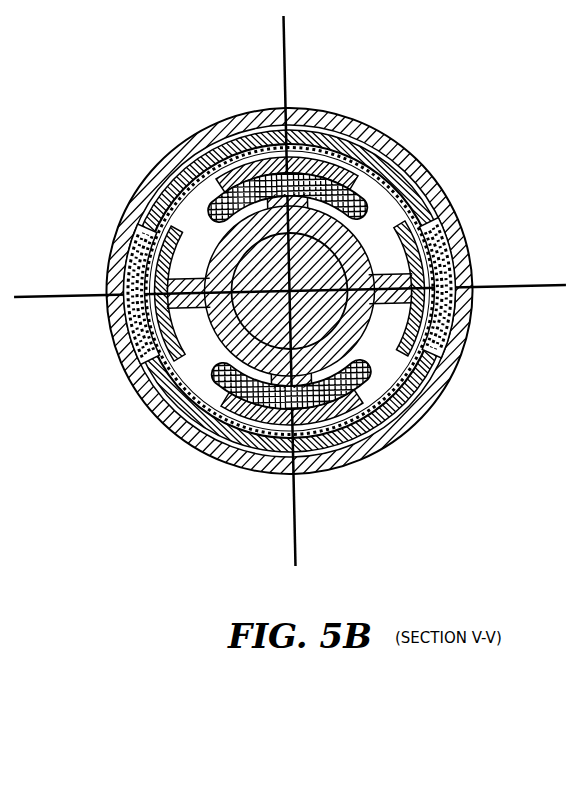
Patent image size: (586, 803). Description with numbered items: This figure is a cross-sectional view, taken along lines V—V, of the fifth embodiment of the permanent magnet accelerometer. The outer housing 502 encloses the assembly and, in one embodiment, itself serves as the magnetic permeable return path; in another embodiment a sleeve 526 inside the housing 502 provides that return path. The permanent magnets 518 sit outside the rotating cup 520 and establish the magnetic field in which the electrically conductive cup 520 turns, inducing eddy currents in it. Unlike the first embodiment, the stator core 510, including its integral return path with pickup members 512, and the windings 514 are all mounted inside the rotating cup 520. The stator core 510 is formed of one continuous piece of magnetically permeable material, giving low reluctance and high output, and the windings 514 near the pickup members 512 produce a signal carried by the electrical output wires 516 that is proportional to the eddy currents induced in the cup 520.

The housing 502 is at (232, 469).
The pickup members 512 is at (350, 443).
The sleeve 526 is at (398, 393).
The magnets 518 is at (127, 248).
The windings 514 is at (313, 178).
The cup 520 is at (412, 198).
The stator core 510 is at (212, 356).
The electrical output wires 516 is at (9, 79).